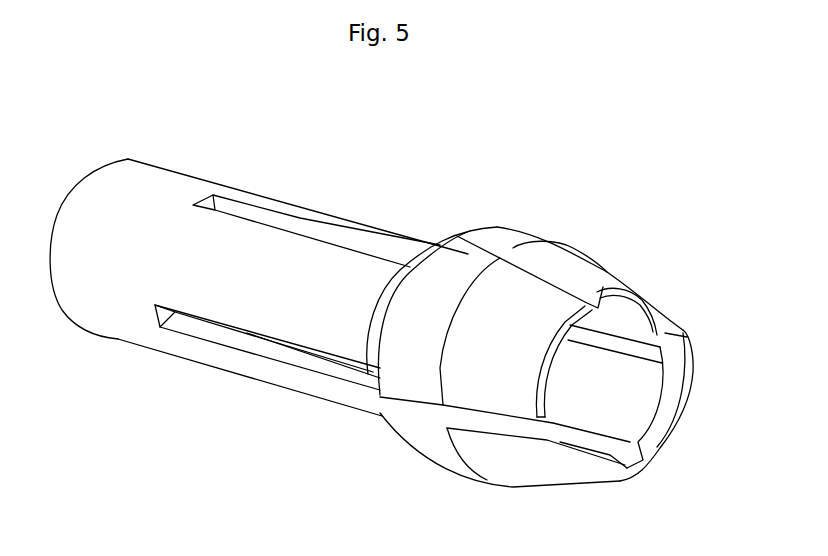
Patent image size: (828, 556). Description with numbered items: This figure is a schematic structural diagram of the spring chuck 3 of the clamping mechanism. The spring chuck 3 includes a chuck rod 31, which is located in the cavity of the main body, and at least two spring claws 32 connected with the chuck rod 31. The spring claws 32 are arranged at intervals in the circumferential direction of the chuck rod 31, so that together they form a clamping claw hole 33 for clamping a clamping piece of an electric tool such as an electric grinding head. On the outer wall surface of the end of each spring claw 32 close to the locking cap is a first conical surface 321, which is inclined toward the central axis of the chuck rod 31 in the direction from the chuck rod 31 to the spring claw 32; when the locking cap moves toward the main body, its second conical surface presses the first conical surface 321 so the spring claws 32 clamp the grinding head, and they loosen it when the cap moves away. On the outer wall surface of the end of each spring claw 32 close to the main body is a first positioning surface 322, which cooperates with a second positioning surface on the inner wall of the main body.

The spring chuck 3 is at (451, 199).
The chuck rod 31 is at (277, 381).
The spring claws 32 is at (533, 478).
The first conical surface 321 is at (612, 268).
The first positioning surface 322 is at (378, 428).
The clamping claw hole 33 is at (645, 427).